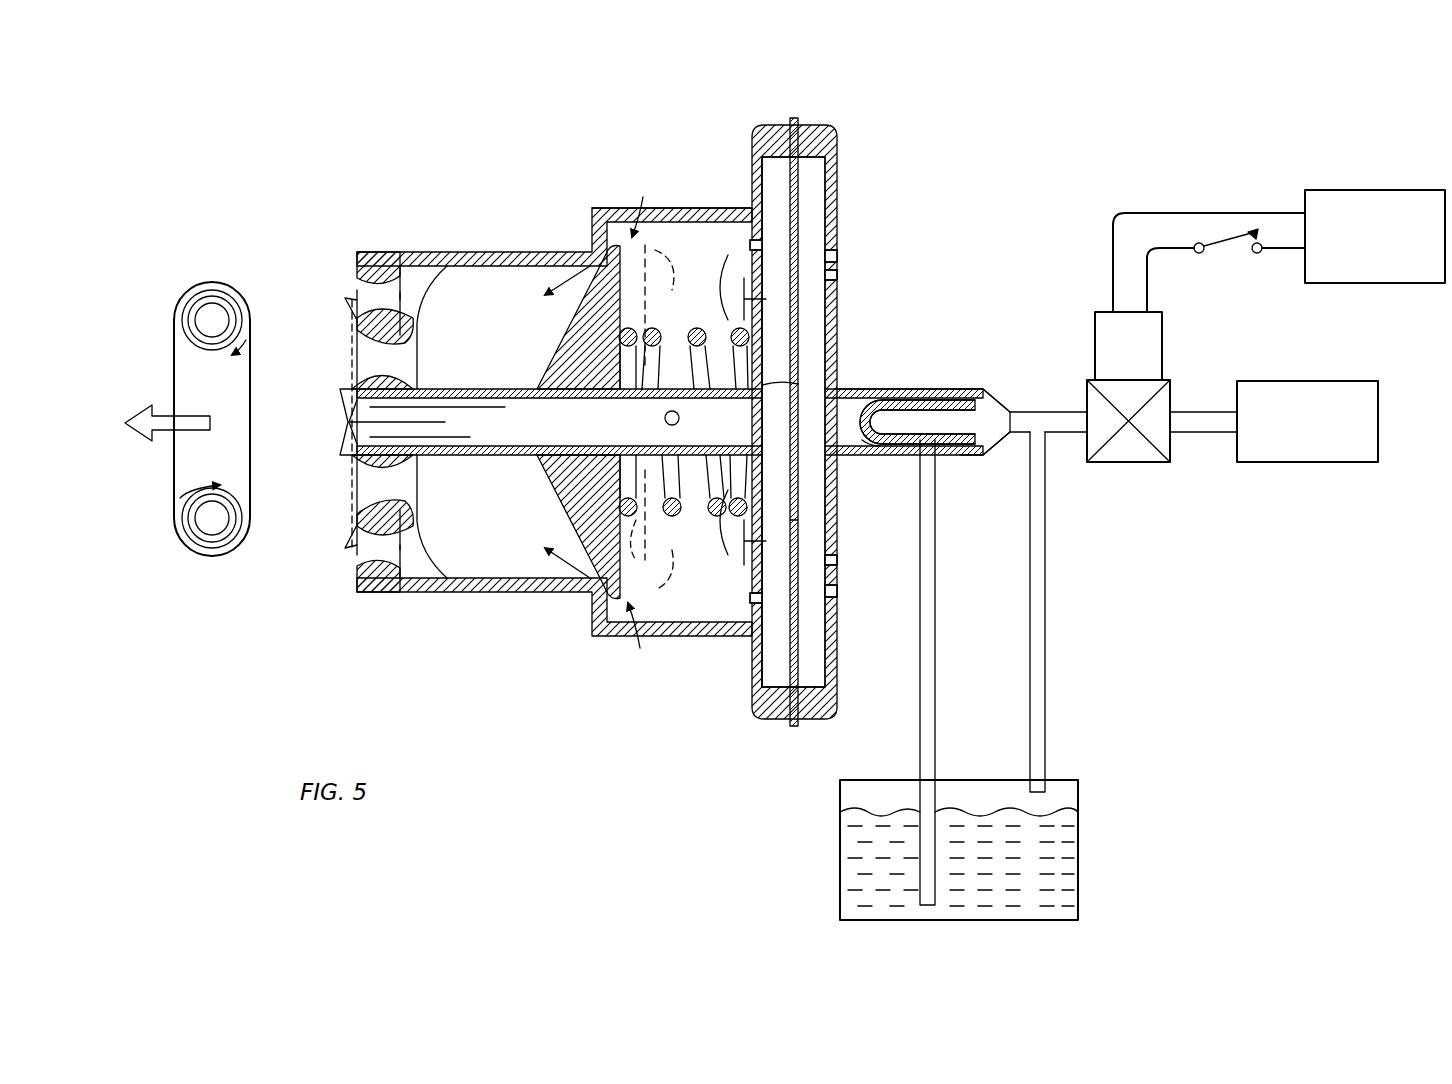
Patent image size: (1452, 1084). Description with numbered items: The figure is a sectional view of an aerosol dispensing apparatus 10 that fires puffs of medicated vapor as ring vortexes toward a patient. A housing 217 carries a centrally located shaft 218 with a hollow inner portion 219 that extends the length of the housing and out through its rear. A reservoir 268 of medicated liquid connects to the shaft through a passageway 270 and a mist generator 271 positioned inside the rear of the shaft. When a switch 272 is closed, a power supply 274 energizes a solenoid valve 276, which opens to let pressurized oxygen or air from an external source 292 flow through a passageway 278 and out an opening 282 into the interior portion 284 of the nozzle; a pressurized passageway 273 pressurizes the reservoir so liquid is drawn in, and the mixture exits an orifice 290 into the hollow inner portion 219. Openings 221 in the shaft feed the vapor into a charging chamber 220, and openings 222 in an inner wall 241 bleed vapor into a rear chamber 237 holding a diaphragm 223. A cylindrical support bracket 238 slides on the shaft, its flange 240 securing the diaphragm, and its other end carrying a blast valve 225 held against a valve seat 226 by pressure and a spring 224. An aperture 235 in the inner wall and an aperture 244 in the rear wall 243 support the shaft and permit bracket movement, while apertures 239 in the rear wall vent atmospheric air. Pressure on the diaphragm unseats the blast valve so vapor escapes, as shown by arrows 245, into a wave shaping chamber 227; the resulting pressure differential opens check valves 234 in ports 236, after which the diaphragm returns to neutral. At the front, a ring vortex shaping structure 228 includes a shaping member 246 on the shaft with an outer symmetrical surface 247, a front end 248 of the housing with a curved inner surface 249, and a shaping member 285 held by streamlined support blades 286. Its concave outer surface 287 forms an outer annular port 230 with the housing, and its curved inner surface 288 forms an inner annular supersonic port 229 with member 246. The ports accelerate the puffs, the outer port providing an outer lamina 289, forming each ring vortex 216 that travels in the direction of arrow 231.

The dispensing apparatus 10 is at (345, 165).
The ring vortex 216 is at (200, 288).
The housing 217 is at (475, 252).
The shaft 218 is at (503, 388).
The hollow inner portion 219 is at (744, 430).
The charging chamber 220 is at (636, 296).
The openings 221 is at (663, 418).
The openings 222 is at (750, 243).
The diaphragm 223 is at (798, 192).
The spring 224 is at (655, 525).
The blast valve 225 is at (572, 316).
The valve seat 226 is at (593, 226).
The wave shaping chamber 227 is at (503, 521).
The ring vortex shaping structure 228 is at (342, 588).
The inner annular supersonic port 229 is at (355, 352).
The outer annular port 230 is at (356, 300).
The arrow 231 is at (148, 412).
The check valve 234 is at (764, 299).
The aperture 235 is at (788, 384).
The ports 236 is at (755, 292).
The rear chamber 237 is at (776, 176).
The cylindrical support bracket 238 is at (684, 438).
The apertures 239 is at (829, 253).
The flange 240 is at (798, 520).
The inner wall 241 is at (731, 287).
The rear wall 243 is at (838, 215).
The aperture 244 is at (838, 388).
The arrows 245 is at (536, 558).
The shaping member 246 is at (412, 470).
The outer symmetrical surface 247 is at (398, 475).
The front end 248 is at (357, 252).
The curved inner surface 249 is at (410, 300).
The reservoir 268 is at (1080, 795).
The passageway 270 is at (936, 718).
The mist generator 271 is at (870, 456).
The switch 272 is at (1224, 243).
The passageway 273 is at (1046, 718).
The power supply 274 is at (1322, 190).
The solenoid valve 276 is at (1132, 463).
The passageway 278 is at (1048, 410).
The opening 282 is at (956, 388).
The interior portion 284 is at (958, 456).
The shaping member 285 is at (412, 520).
The streamlined support blades 286 is at (400, 582).
The concave outer surface 287 is at (356, 536).
The curved inner surface 288 is at (415, 338).
The outer lamina 289 is at (252, 396).
The orifice 290 is at (866, 421).
The external source 292 is at (1275, 381).